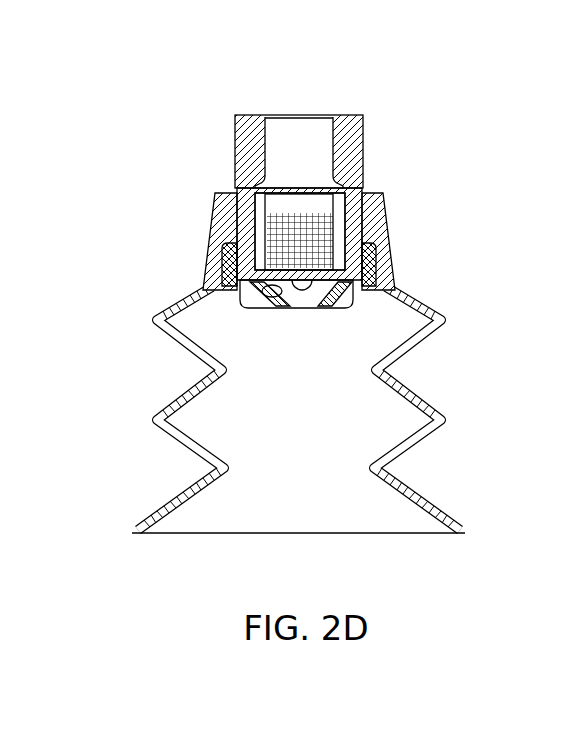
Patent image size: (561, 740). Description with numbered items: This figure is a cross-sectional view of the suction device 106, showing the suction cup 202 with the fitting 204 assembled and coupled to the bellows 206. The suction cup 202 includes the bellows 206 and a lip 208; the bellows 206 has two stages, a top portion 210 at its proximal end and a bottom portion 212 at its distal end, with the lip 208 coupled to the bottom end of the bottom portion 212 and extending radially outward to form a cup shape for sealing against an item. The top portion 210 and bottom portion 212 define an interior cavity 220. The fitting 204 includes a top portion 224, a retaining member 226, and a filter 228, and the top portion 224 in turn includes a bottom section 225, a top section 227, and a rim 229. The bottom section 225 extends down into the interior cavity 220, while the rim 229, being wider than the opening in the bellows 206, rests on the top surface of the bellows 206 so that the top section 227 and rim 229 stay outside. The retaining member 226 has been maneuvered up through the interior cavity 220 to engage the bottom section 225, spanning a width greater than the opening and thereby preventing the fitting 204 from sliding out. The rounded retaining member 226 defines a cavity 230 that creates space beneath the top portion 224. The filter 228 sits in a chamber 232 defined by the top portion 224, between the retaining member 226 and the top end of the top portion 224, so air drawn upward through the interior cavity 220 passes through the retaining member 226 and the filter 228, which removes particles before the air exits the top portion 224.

The suction device 106 is at (280, 62).
The suction cup 202 is at (58, 205).
The fitting 204 is at (363, 148).
The bellows 206 is at (452, 322).
The lip 208 is at (458, 531).
The top portion 210 is at (152, 322).
The bottom portion 212 is at (152, 422).
The interior cavity 220 is at (290, 430).
The top portion 224 is at (248, 152).
The bottom section 225 is at (245, 222).
The retaining member 226 is at (325, 300).
The top section 227 is at (363, 123).
The filter 228 is at (325, 232).
The rim 229 is at (215, 198).
The cavity 230 is at (302, 296).
The chamber 232 is at (345, 197).